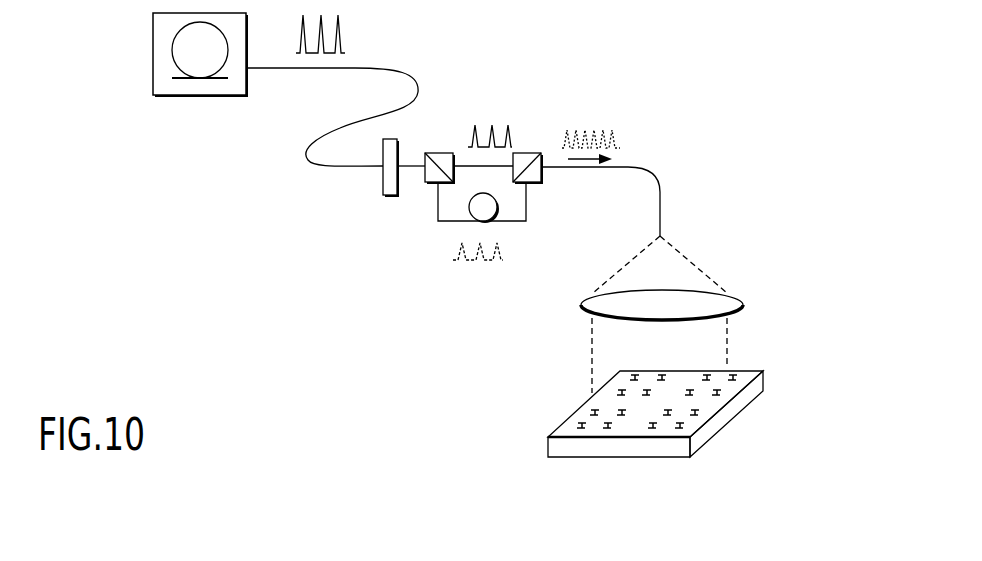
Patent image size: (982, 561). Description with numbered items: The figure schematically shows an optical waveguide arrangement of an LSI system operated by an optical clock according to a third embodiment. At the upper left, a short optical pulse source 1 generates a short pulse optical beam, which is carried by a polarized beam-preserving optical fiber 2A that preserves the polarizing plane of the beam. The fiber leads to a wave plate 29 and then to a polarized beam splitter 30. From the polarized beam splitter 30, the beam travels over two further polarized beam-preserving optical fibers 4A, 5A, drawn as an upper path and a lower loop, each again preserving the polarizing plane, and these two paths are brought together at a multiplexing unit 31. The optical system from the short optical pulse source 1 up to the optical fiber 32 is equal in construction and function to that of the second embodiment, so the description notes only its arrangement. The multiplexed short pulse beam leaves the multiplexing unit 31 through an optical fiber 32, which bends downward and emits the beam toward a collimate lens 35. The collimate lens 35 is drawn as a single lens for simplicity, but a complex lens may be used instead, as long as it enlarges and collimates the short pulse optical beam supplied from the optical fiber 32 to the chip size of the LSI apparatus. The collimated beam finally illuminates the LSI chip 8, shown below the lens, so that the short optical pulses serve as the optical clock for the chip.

The short optical pulse source 1 is at (200, 96).
The polarized beam-preserving optical fiber 2A is at (405, 80).
The wave plate 29 is at (380, 182).
The polarized beam splitter 30 is at (433, 185).
The multiplexing unit 31 is at (523, 153).
The polarized beam-preserving optical fiber 4A is at (465, 165).
The polarized beam-preserving optical fiber 5A is at (452, 222).
The optical fiber 32 is at (655, 178).
The collimate lens 35 is at (742, 303).
The LSI chip 8 is at (740, 405).